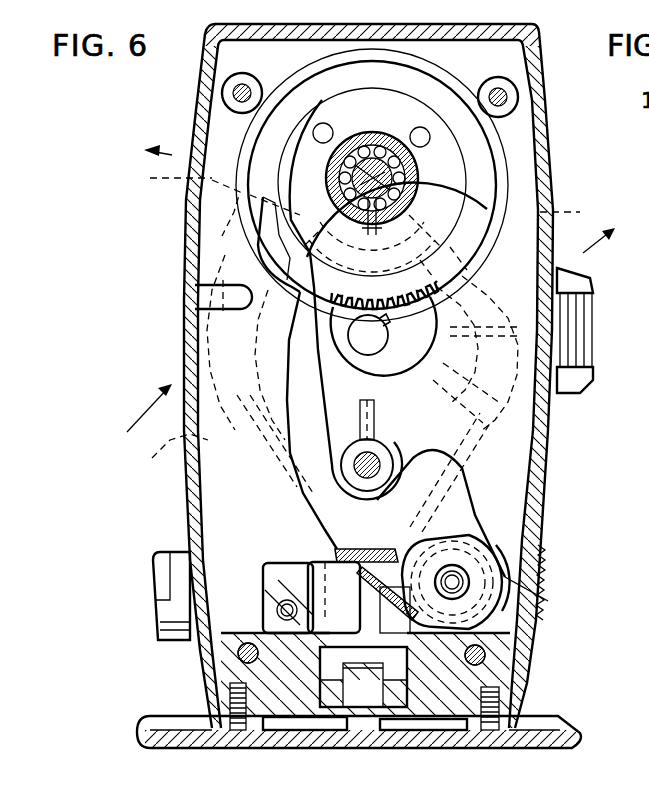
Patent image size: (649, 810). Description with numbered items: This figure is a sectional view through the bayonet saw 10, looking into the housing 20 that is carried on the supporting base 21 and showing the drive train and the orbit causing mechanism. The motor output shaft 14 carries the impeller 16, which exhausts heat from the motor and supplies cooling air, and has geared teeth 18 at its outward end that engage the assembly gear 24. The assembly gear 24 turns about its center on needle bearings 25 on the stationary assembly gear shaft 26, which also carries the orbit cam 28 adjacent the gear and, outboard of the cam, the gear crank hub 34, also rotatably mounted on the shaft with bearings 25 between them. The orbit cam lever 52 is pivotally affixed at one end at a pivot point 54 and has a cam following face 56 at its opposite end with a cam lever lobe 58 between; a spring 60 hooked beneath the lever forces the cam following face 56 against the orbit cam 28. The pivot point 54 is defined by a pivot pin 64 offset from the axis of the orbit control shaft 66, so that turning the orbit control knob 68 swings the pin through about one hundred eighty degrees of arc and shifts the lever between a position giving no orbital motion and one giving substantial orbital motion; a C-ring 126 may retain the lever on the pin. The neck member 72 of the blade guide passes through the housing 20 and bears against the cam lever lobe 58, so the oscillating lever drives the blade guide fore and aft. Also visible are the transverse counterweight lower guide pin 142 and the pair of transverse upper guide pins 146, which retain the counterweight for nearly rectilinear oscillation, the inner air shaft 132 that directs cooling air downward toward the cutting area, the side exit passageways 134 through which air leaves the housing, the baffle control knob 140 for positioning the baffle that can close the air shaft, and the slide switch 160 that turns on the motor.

The bayonet saw 10 is at (180, 98).
The output shaft 14 is at (372, 339).
The impeller 16 is at (290, 330).
The geared teeth 18 is at (389, 324).
The housing 20 is at (182, 356).
The supporting base 21 is at (577, 721).
The assembly gear 24 is at (310, 72).
The needle bearings 25 is at (374, 156).
The assembly gear shaft 26 is at (366, 176).
The orbit cam 28 is at (367, 97).
The gear crank hub 34 is at (416, 166).
The orbit cam lever 52 is at (314, 491).
The pivot point 54 is at (462, 568).
The cam following face 56 is at (281, 218).
The cam lever lobe 58 is at (337, 553).
The spring 60 is at (513, 553).
The pivot pin 64 is at (467, 592).
The orbit control shaft 66 is at (427, 540).
The orbit control knob 68 is at (546, 578).
The neck member 72 is at (340, 597).
The C-ring 126 is at (548, 595).
The inner air shaft 132 is at (270, 527).
The exit passageways 134 is at (365, 312).
The baffle control knob 140 is at (173, 643).
The counterweight lower guide pin 142 is at (361, 473).
The upper guide pins 146 is at (234, 98).
The slide switch 160 is at (581, 342).